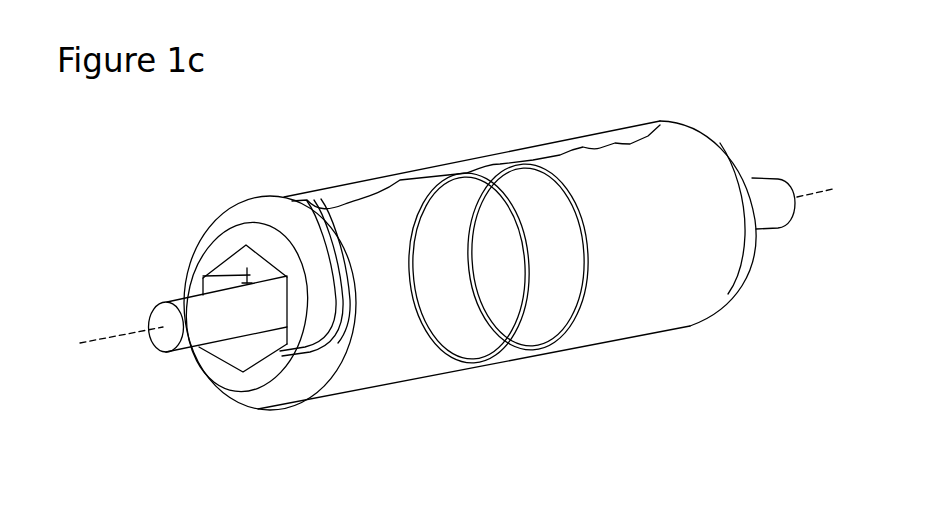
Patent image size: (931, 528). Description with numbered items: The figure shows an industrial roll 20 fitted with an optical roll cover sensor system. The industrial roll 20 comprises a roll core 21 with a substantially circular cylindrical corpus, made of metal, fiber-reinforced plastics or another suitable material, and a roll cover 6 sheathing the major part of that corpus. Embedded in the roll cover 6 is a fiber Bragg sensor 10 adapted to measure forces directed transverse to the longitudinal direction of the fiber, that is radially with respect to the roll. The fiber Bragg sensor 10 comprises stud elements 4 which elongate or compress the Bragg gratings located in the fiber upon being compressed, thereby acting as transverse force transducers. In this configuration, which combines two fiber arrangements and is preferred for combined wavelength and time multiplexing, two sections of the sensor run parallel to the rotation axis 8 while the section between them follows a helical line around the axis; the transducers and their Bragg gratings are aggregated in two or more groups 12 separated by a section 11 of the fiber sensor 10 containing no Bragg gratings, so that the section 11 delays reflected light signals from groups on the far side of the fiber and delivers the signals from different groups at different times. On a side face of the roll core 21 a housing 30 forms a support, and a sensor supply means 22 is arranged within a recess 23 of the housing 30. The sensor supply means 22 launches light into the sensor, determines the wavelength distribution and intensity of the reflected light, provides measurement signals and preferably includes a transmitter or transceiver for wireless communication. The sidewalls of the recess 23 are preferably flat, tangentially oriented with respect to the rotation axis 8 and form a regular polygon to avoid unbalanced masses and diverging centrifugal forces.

The industrial roll 20 is at (200, 175).
The fiber Bragg sensor 10 is at (660, 121).
The housing 30 is at (217, 250).
The roll core 21 is at (740, 168).
The groups 12 is at (388, 190).
The stud elements 4 is at (392, 191).
The section 11 is at (593, 246).
The roll cover 6 is at (587, 332).
The rotation axis 8 is at (120, 333).
The sensor supply means 22 is at (220, 357).
The recess 23 is at (203, 277).